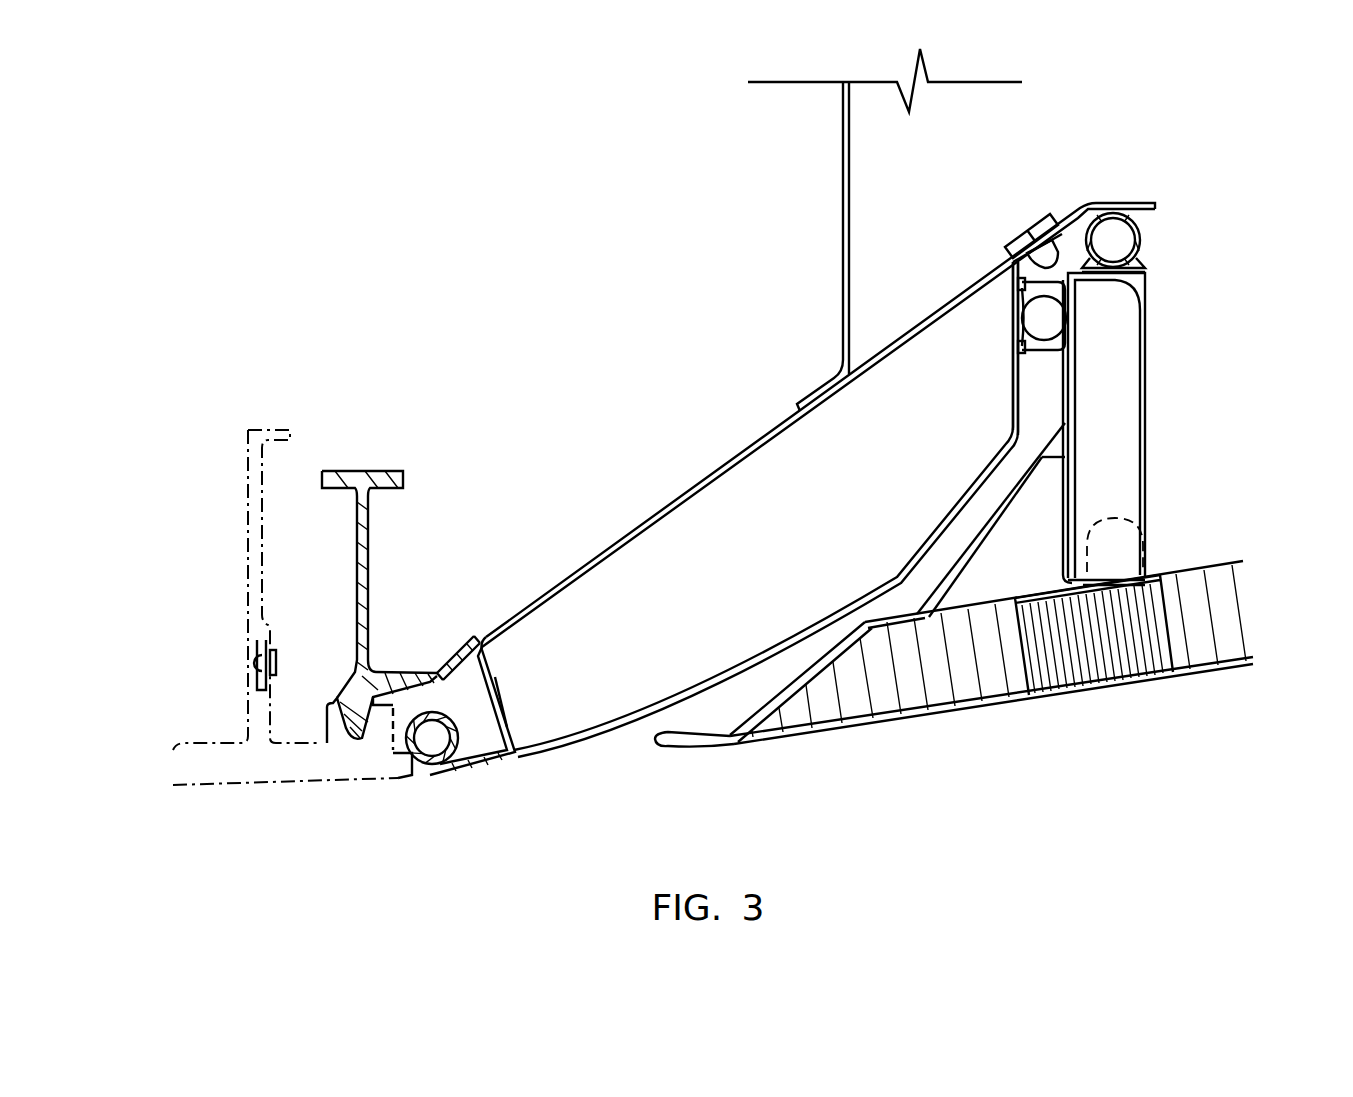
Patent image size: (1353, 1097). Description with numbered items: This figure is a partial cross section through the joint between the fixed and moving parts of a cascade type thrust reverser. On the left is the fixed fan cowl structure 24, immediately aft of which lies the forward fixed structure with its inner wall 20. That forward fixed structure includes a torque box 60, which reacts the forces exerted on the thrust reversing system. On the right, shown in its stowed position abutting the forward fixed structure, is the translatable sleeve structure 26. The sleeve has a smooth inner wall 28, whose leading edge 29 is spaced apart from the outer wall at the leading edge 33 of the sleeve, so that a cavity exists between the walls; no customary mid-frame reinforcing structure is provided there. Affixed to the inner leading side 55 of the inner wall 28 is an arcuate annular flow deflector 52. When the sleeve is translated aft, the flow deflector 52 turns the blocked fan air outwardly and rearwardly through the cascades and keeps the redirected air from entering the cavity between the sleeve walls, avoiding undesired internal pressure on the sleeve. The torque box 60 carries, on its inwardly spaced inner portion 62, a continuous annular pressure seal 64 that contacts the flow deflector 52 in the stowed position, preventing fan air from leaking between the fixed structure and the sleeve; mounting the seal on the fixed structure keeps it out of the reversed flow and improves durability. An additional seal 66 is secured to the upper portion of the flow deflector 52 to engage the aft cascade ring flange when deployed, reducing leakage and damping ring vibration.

The inner wall 20 is at (556, 757).
The fixed fan cowl structure 24 is at (352, 780).
The translatable sleeve structure 26 is at (1243, 688).
The smooth inner wall 28 is at (1022, 700).
The leading edge 29 is at (685, 747).
The leading edge 33 is at (840, 730).
The arcuate annular flow deflector 52 is at (1047, 441).
The inner leading side 55 is at (890, 613).
The torque box 60 is at (702, 483).
The inwardly spaced inner portion 62 is at (1022, 397).
The annular pressure seal 64 is at (1044, 296).
The additional seal 66 is at (1142, 238).